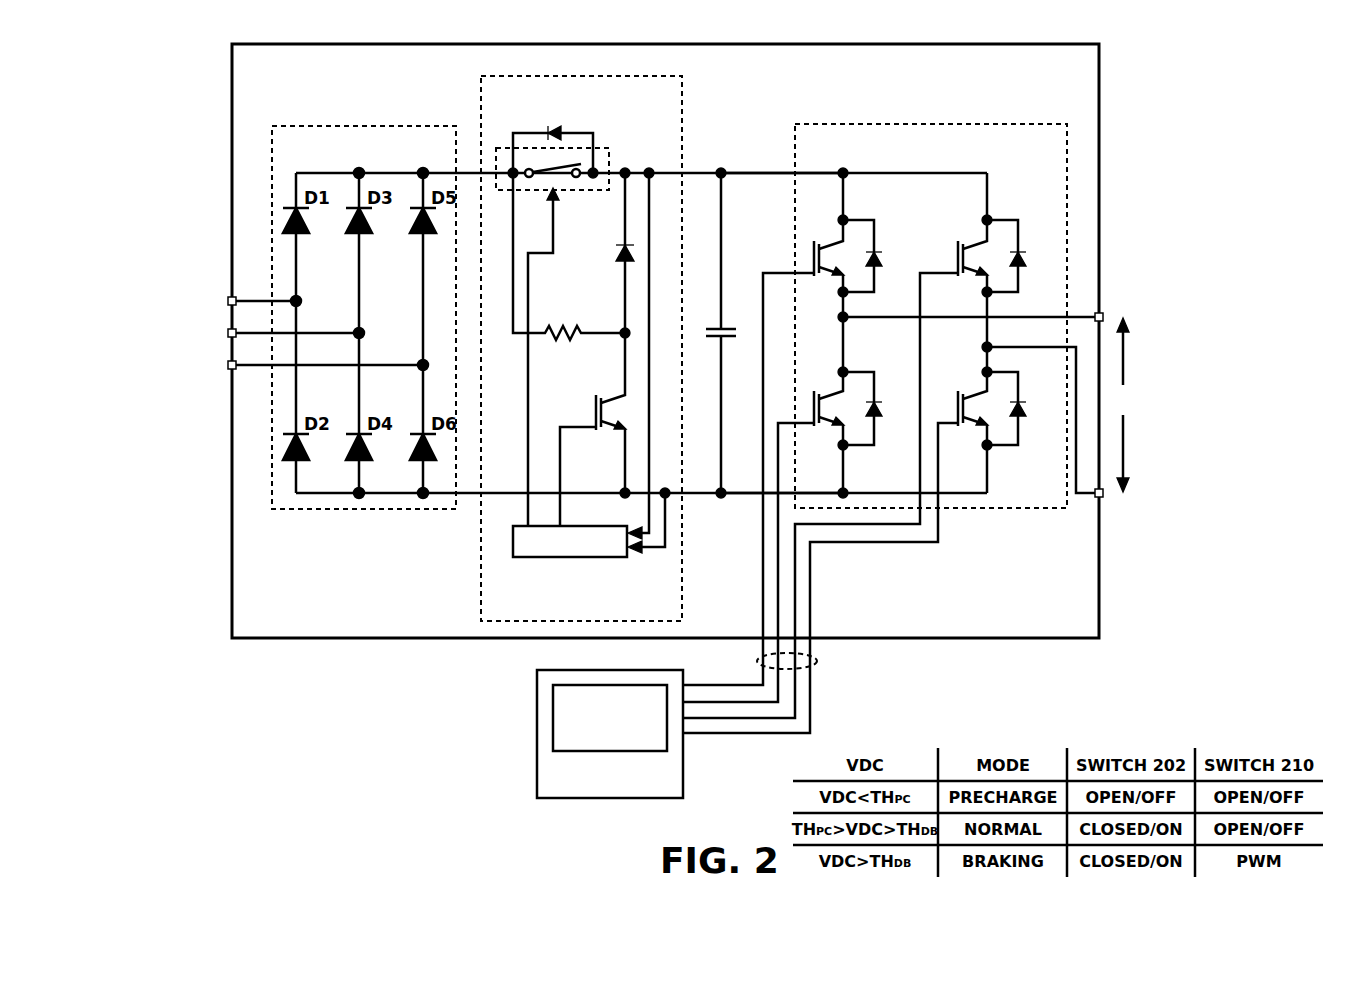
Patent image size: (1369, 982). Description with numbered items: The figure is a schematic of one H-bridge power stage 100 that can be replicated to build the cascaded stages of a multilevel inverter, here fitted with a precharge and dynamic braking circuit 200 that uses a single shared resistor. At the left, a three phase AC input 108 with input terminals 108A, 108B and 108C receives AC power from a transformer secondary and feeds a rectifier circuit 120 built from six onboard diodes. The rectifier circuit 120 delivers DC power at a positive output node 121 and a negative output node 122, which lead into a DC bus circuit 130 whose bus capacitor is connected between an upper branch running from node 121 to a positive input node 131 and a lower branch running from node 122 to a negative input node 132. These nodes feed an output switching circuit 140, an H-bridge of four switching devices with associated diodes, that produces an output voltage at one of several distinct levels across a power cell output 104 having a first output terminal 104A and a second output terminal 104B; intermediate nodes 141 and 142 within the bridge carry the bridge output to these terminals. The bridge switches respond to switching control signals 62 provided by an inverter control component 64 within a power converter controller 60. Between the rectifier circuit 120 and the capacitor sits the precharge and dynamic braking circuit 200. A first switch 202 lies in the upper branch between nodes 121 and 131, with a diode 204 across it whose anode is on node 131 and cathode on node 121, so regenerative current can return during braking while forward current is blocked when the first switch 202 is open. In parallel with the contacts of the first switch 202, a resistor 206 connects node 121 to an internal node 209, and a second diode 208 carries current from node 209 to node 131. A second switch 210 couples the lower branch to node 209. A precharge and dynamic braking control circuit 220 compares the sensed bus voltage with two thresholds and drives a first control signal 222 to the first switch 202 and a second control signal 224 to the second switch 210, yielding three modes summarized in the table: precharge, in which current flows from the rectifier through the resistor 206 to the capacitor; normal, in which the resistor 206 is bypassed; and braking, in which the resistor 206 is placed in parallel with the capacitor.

The power stage 100 is at (232, 72).
The power cell output 104 is at (1142, 377).
The first output terminal 104A is at (1104, 316).
The second output terminal 104B is at (1104, 497).
The three phase AC input 108 is at (283, 314).
The input terminal 108A is at (227, 302).
The input terminal 108B is at (227, 334).
The input terminal 108C is at (227, 366).
The rectifier circuit 120 is at (358, 125).
The positive output node 121 is at (322, 173).
The negative output node 122 is at (344, 493).
The DC bus circuit 130 is at (698, 140).
The positive input node 131 is at (748, 173).
The negative input node 132 is at (750, 493).
The output switching circuit 140 is at (932, 124).
The output node A 141 is at (856, 317).
The output node B 142 is at (1000, 347).
The precharge and dynamic braking circuit 200 is at (481, 587).
The first switch 202 is at (609, 152).
The diode 204 is at (557, 119).
The resistor 206 is at (569, 256).
The second diode 208 is at (610, 250).
The internal node 209 is at (625, 328).
The second switch 210 is at (626, 415).
The precharge and dynamic braking control circuit 220 is at (584, 527).
The first control signal 222 is at (530, 382).
The second control signal 224 is at (562, 463).
The power converter controller 60 is at (537, 775).
The switching control signals 62 is at (757, 661).
The inverter control component 64 is at (553, 718).